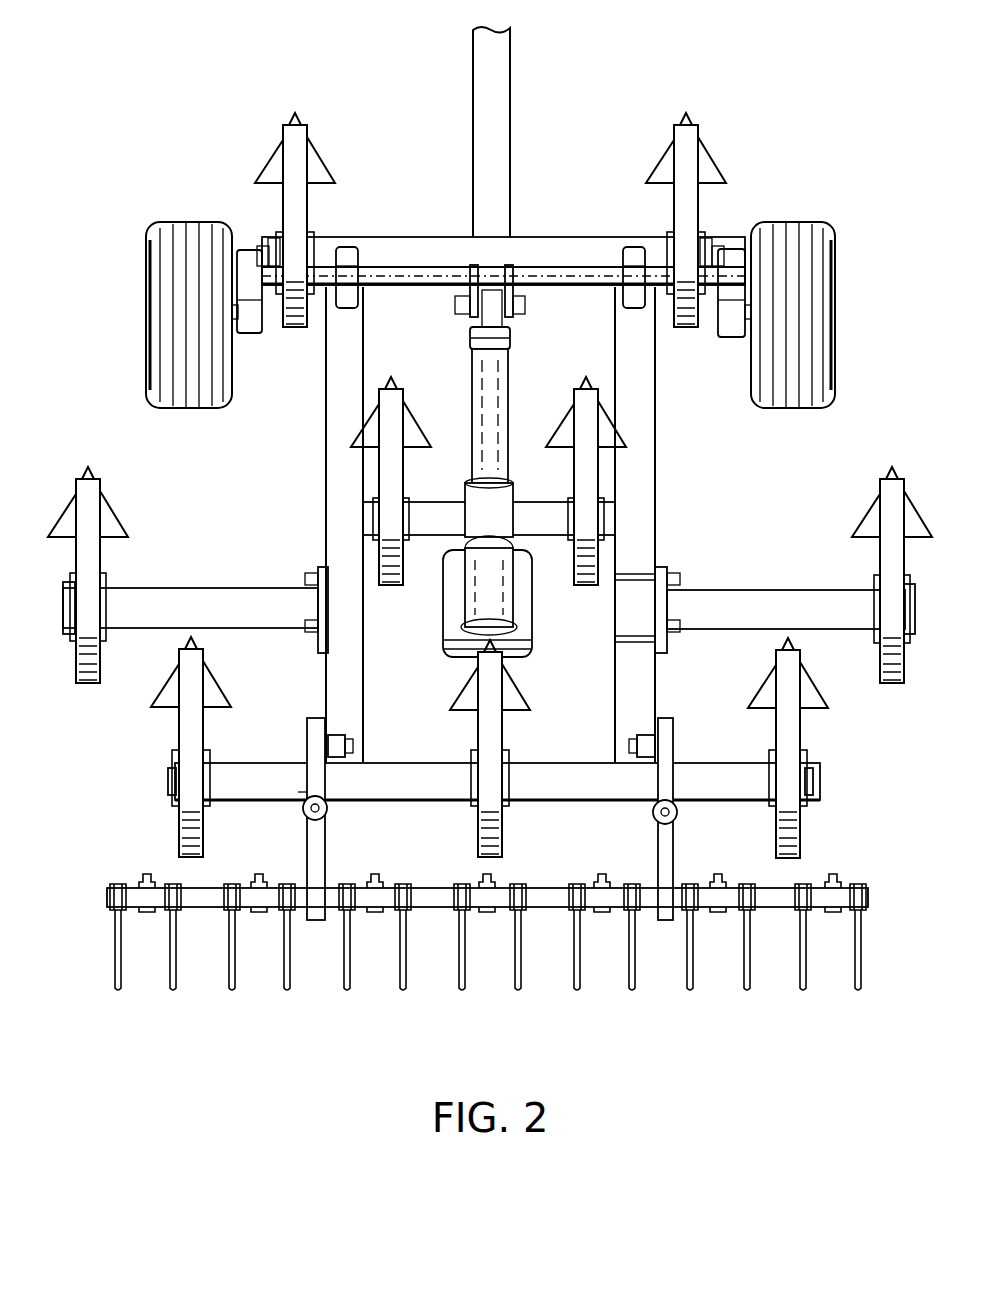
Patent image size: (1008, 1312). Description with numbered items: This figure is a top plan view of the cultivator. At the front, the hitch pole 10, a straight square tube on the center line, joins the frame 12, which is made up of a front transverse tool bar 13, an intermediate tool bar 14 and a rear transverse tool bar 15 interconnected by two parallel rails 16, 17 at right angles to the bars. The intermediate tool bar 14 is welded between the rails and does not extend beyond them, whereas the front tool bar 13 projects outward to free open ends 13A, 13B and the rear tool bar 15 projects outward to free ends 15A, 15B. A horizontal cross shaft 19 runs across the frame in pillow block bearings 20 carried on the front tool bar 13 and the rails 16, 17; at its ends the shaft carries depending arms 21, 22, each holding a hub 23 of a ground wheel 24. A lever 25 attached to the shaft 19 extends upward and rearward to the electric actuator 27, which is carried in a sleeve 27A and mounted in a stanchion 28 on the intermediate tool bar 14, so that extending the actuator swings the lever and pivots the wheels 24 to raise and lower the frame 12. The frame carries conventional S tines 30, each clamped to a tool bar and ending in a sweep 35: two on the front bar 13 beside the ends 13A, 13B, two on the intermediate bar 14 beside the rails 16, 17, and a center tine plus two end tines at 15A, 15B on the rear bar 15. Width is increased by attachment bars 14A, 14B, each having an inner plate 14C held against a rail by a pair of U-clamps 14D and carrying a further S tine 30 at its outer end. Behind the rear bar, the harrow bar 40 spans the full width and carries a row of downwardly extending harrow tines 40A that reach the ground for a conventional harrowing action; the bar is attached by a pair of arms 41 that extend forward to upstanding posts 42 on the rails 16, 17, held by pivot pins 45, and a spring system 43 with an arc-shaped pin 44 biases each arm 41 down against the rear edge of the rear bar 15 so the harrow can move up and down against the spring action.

The hitch pole 10 is at (468, 68).
The frame 12 is at (503, 218).
The front transverse tool bar 13 is at (545, 246).
The free open end of front bar 13A is at (266, 245).
The free open end of front bar 13B is at (736, 240).
The intermediate transverse tool bar 14 is at (427, 522).
The attachment bar 14A is at (225, 591).
The attachment bar 14B is at (736, 590).
The inner plate 14C is at (307, 610).
The U-clamps 14D is at (345, 568).
The rear transverse tool bar 15 is at (535, 765).
The free end of rear bar 15A is at (165, 783).
The free end of rear bar 15B is at (817, 785).
The rail 16 is at (326, 460).
The rail 17 is at (655, 480).
The horizontal cross shaft 19 is at (410, 265).
The pillow block bearings 20 is at (632, 258).
The depending arm 21 is at (734, 340).
The depending arm 22 is at (252, 335).
The hub 23 is at (220, 312).
The ground wheel 24 is at (145, 350).
The lever 25 is at (513, 306).
The electric actuator 27 is at (512, 393).
The sleeve 27A is at (520, 496).
The stanchion 28 is at (530, 548).
The S tines 30 is at (490, 461).
The sweep 35 is at (275, 172).
The harrow bar 40 is at (110, 893).
The tines 40A is at (227, 975).
The arms 41 is at (323, 868).
The upstanding posts 42 is at (352, 770).
The spring system 43 is at (303, 787).
The pin 44 is at (306, 812).
The pivot pin 45 is at (352, 743).